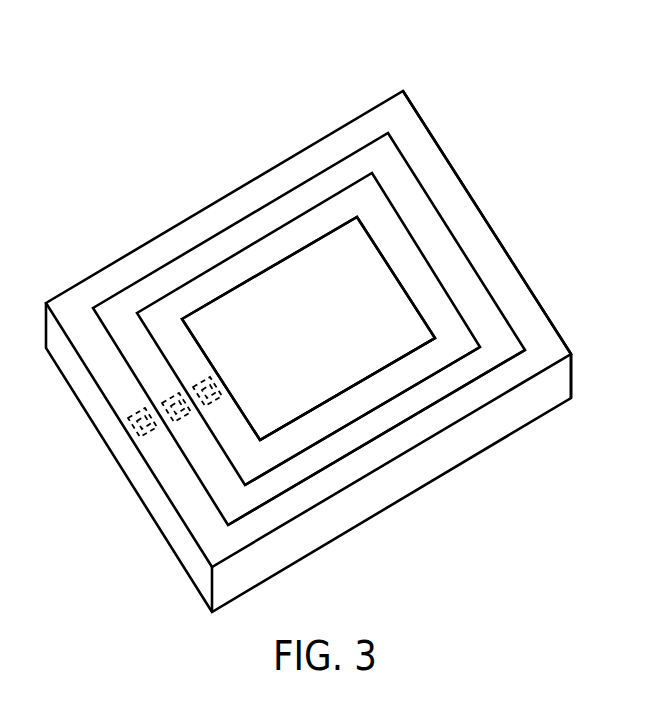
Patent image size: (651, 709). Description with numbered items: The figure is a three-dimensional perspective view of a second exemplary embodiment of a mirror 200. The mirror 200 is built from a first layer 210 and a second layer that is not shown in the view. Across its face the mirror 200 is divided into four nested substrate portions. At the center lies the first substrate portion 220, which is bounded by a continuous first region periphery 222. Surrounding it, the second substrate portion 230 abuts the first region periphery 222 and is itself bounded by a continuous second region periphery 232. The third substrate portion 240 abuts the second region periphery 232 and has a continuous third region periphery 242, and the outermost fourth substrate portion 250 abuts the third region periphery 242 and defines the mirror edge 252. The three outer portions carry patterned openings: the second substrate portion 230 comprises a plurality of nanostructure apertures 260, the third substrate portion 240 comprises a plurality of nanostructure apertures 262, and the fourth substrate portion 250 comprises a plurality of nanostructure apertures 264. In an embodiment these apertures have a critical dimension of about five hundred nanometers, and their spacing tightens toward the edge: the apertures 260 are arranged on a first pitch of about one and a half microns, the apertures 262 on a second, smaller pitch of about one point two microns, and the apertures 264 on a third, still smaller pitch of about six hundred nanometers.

The mirror 200 is at (104, 138).
The first layer 210 is at (53, 338).
The first substrate portion 220 is at (355, 301).
The first region periphery 222 is at (302, 410).
The second substrate portion 230 is at (372, 197).
The second region periphery 232 is at (355, 415).
The third substrate portion 240 is at (410, 198).
The third region periphery 242 is at (423, 410).
The fourth substrate portion 250 is at (487, 250).
The mirror edge 252 is at (571, 352).
The nanostructure apertures 260 is at (195, 381).
The nanostructure apertures 262 is at (160, 396).
The nanostructure apertures 264 is at (130, 414).